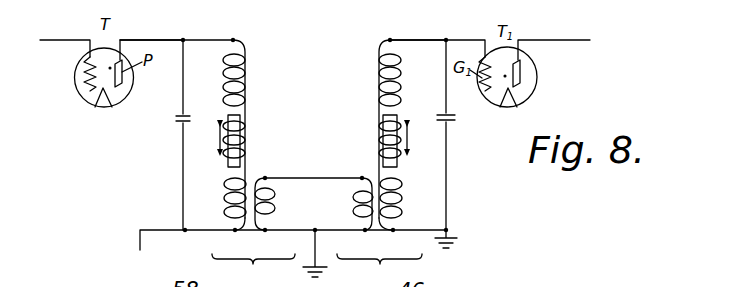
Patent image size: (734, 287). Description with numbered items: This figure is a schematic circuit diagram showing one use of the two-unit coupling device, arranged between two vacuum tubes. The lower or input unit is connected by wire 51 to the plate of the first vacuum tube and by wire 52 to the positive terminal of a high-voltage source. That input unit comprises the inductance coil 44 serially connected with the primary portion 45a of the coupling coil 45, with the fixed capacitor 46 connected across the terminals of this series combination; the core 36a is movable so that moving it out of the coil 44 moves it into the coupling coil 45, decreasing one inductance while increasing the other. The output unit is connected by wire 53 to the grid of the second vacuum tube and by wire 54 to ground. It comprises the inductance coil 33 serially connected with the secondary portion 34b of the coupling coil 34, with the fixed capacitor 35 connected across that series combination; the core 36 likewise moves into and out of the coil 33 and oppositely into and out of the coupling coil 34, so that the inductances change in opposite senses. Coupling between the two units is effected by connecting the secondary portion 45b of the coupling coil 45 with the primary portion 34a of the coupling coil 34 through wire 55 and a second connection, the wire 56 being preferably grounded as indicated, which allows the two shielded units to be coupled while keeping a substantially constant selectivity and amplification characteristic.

The wire 51 is at (135, 40).
The wire 52 is at (165, 214).
The wire 53 is at (458, 40).
The wire 54 is at (452, 234).
The fixed capacitor 46 is at (167, 135).
The fixed capacitor 35 is at (461, 135).
The inductance coil 44 is at (221, 121).
The inductance coil 33 is at (405, 124).
The core 36a is at (241, 117).
The core 36 is at (382, 117).
The wire 55 is at (297, 178).
The wire 56 is at (287, 230).
The primary portion 45a is at (236, 215).
The secondary portion 45b is at (268, 215).
The coupling coil 45 is at (253, 270).
The primary portion 34a is at (365, 215).
The secondary portion 34b is at (398, 215).
The coupling coil 34 is at (379, 270).